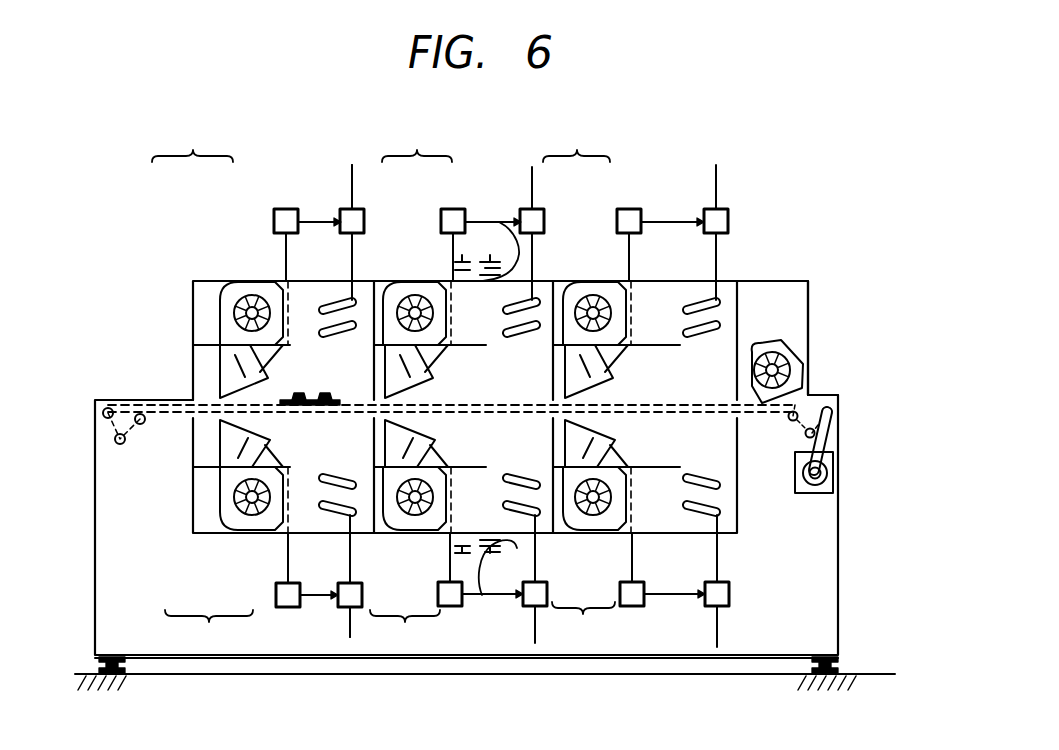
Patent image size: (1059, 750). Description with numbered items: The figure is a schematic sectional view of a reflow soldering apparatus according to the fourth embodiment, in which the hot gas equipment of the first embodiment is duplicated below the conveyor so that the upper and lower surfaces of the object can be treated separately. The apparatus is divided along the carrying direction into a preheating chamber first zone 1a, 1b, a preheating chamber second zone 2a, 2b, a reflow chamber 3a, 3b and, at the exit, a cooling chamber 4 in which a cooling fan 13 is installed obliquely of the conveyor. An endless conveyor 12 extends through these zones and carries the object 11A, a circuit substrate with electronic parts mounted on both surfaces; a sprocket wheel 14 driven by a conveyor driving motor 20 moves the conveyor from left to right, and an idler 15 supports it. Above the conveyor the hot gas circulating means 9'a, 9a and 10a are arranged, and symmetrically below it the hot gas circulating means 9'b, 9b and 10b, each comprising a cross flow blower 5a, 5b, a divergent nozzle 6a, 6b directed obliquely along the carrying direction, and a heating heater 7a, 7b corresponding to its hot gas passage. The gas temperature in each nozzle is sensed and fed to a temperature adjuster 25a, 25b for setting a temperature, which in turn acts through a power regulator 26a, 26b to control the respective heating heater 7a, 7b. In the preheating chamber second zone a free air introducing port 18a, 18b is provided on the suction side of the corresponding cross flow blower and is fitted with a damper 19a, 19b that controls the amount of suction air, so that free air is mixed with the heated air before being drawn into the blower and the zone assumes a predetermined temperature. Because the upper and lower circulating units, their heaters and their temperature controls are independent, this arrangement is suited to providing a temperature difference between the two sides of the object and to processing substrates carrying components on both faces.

The preheating chamber first zone (upper side) 1a is at (190, 300).
The preheating chamber first zone (lower side) 1b is at (190, 518).
The preheating chamber second zone (upper side) 2a is at (352, 198).
The preheating chamber second zone (lower side) 2b is at (350, 552).
The reflow chamber (upper side) 3a is at (730, 281).
The reflow chamber (lower side) 3b is at (731, 522).
The cooling chamber 4 is at (790, 281).
The cross flow blower (upper) 5a is at (232, 318).
The cross flow blower (lower) 5b is at (232, 497).
The divergent nozzle (upper) 6a is at (222, 347).
The divergent nozzle (lower) 6b is at (222, 430).
The heating heater (upper) 7a is at (323, 310).
The heating heater (lower) 7b is at (323, 506).
The hot gas circulating means (upper, first zone) 9'a is at (192, 143).
The hot gas circulating means (upper, second zone) 9a is at (417, 142).
The hot gas circulating means (lower, first zone) 9'b is at (209, 630).
The hot gas circulating means (lower, second zone) 9b is at (405, 630).
The hot gas circulating means (upper, reflow chamber) 10a is at (576, 143).
The hot gas circulating means (lower, reflow chamber) 10b is at (583, 624).
The object to be treated 11A is at (335, 398).
The conveyor 12 is at (120, 439).
The cooling fan 13 is at (788, 348).
The sprocket wheel 14 is at (835, 405).
The idler 15 is at (108, 409).
The free air introducing port (upper) 18a is at (499, 222).
The free air introducing port (lower) 18b is at (517, 548).
The damper (upper) 19a is at (490, 258).
The damper (lower) 19b is at (490, 557).
The conveyor driving motor 20 is at (815, 494).
The temperature adjuster (upper) 25a is at (278, 209).
The temperature adjuster (lower) 25b is at (288, 607).
The power regulator (upper) 26a is at (340, 210).
The power regulator (lower) 26b is at (338, 608).